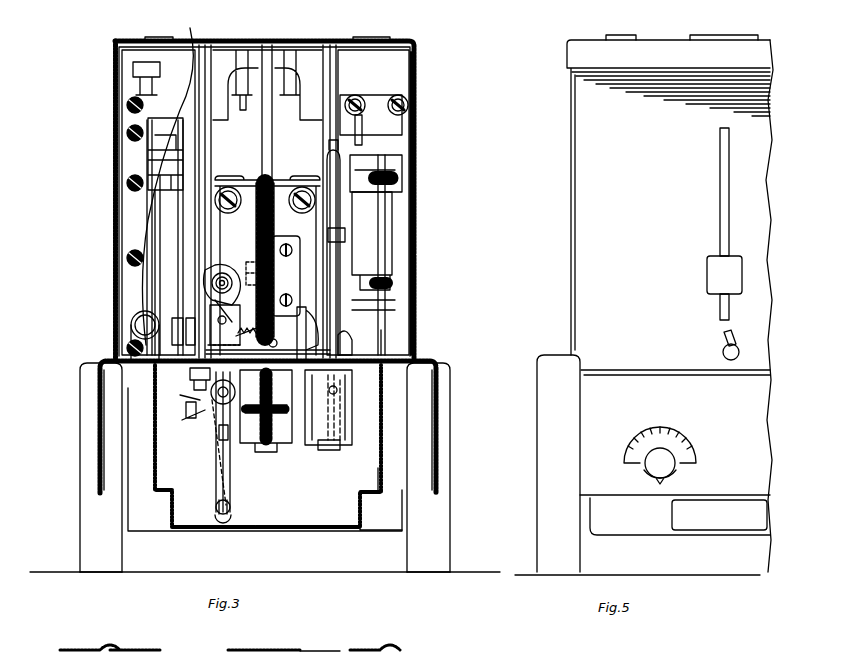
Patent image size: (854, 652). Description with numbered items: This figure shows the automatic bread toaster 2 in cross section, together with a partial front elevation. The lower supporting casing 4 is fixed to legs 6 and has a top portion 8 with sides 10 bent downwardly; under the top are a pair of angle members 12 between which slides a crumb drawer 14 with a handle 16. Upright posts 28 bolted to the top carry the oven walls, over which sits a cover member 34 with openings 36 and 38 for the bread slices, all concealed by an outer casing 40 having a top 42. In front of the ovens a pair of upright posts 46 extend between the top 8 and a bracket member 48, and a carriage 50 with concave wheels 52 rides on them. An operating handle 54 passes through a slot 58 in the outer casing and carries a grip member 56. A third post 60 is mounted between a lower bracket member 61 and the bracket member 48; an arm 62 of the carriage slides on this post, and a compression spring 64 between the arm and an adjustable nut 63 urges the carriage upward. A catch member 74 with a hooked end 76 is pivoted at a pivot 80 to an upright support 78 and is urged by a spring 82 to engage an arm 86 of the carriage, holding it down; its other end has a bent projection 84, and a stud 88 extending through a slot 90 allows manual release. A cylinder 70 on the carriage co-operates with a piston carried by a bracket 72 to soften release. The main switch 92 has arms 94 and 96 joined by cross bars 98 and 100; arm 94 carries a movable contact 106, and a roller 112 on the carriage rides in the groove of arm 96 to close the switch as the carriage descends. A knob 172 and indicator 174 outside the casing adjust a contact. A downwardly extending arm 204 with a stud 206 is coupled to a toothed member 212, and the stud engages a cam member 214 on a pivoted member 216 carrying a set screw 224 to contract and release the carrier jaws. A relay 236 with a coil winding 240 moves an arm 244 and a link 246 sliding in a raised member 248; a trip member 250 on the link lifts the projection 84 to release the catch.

In FIG. 3, the automatic bread toaster 2 is at (436, 94).
In FIG. 5, the automatic bread toaster 2 is at (558, 110).
In FIG. 3, the lower supporting casing 4 is at (448, 371).
In FIG. 3, the legs 6 is at (80, 528).
In FIG. 5, the legs 6 is at (537, 481).
In FIG. 3, the top portion 8 is at (428, 360).
In FIG. 3, the sides 10 is at (98, 420).
In FIG. 3, the angle members 12 is at (153, 440).
In FIG. 3, the sliding drawer 14 is at (368, 522).
In FIG. 5, the sliding drawer 14 is at (660, 532).
In FIG. 5, the handle 16 is at (726, 527).
In FIG. 3, the upright posts 28 is at (133, 80).
In FIG. 3, the cover member 34 is at (288, 642).
In FIG. 3, the opening 36 is at (210, 651).
In FIG. 3, the opening 38 is at (334, 651).
In FIG. 3, the outer casing 40 is at (432, 170).
In FIG. 5, the outer casing 40 is at (559, 248).
In FIG. 3, the top 42 is at (416, 651).
In FIG. 3, the upright posts 46 is at (213, 52).
In FIG. 3, the bracket member 48 is at (400, 41).
In FIG. 3, the carriage 50 is at (233, 170).
In FIG. 3, the wheels 52 is at (226, 214).
In FIG. 3, the operating handle 54 is at (246, 273).
In FIG. 5, the grip member 56 is at (707, 280).
In FIG. 5, the slot 58 is at (720, 204).
In FIG. 3, the third post 60 is at (273, 152).
In FIG. 3, the lower bracket member 61 is at (260, 446).
In FIG. 3, the arm 62 is at (290, 178).
In FIG. 3, the adjustable nut 63 is at (281, 414).
In FIG. 3, the compression spring 64 is at (256, 252).
In FIG. 3, the cylinder 70 is at (318, 430).
In FIG. 3, the bracket 72 is at (350, 446).
In FIG. 3, the catch member 74 is at (206, 292).
In FIG. 3, the hooked end 76 is at (218, 270).
In FIG. 3, the upright support 78 is at (242, 306).
In FIG. 3, the pivot 80 is at (218, 322).
In FIG. 3, the spring 82 is at (250, 330).
In FIG. 3, the bent projection 84 is at (303, 307).
In FIG. 3, the arm 86 is at (236, 292).
In FIG. 3, the stud 88 is at (275, 338).
In FIG. 5, the stud 88 is at (723, 352).
In FIG. 5, the slot 90 is at (724, 337).
In FIG. 3, the main switch 92 is at (133, 200).
In FIG. 3, the arm 94 is at (146, 232).
In FIG. 3, the arm 96 is at (158, 230).
In FIG. 3, the cross bar 98 is at (188, 60).
In FIG. 3, the cross bar 100 is at (155, 190).
In FIG. 3, the movable contact 106 is at (130, 326).
In FIG. 3, the roller 112 is at (174, 318).
In FIG. 5, the knob 172 is at (652, 466).
In FIG. 5, the indicator 174 is at (694, 457).
In FIG. 3, the downwardly extending arm 204 is at (222, 475).
In FIG. 3, the stud 206 is at (216, 508).
In FIG. 3, the member 212 is at (212, 398).
In FIG. 3, the cam member 214 is at (215, 488).
In FIG. 3, the member 216 is at (217, 434).
In FIG. 3, the set screw 224 is at (186, 410).
In FIG. 3, the relay 236 is at (396, 257).
In FIG. 3, the coil winding 240 is at (392, 240).
In FIG. 3, the arm 244 is at (345, 234).
In FIG. 3, the link 246 is at (330, 275).
In FIG. 3, the raised member 248 is at (345, 336).
In FIG. 3, the trip member 250 is at (346, 326).